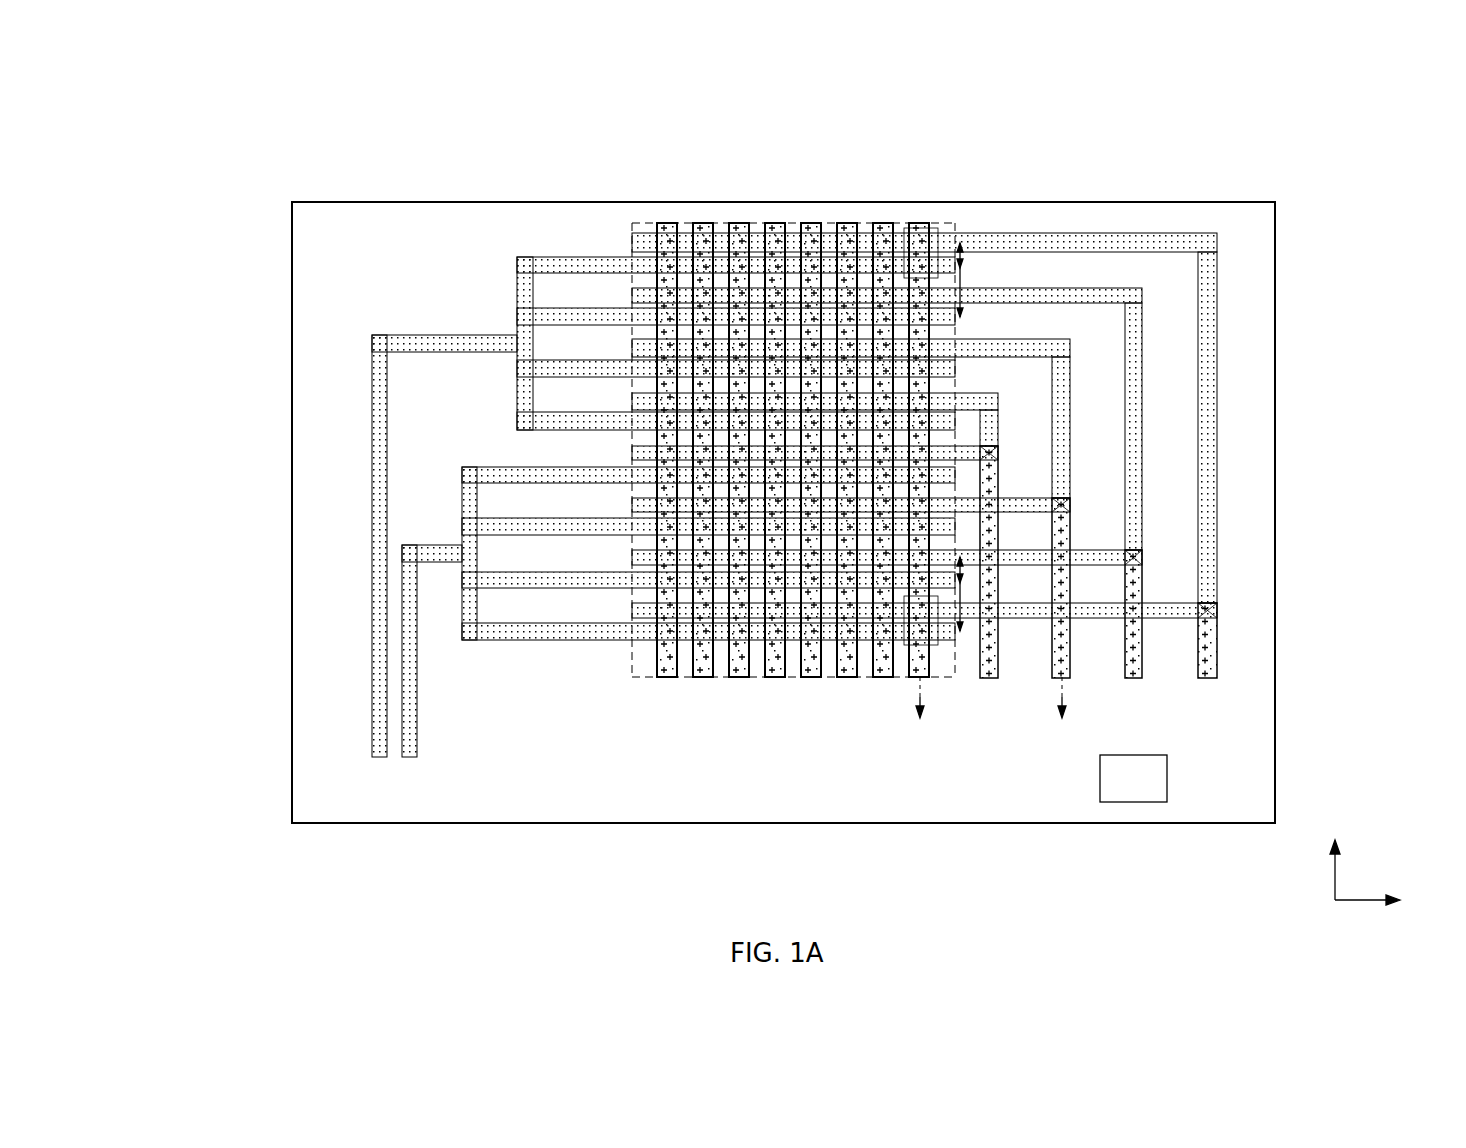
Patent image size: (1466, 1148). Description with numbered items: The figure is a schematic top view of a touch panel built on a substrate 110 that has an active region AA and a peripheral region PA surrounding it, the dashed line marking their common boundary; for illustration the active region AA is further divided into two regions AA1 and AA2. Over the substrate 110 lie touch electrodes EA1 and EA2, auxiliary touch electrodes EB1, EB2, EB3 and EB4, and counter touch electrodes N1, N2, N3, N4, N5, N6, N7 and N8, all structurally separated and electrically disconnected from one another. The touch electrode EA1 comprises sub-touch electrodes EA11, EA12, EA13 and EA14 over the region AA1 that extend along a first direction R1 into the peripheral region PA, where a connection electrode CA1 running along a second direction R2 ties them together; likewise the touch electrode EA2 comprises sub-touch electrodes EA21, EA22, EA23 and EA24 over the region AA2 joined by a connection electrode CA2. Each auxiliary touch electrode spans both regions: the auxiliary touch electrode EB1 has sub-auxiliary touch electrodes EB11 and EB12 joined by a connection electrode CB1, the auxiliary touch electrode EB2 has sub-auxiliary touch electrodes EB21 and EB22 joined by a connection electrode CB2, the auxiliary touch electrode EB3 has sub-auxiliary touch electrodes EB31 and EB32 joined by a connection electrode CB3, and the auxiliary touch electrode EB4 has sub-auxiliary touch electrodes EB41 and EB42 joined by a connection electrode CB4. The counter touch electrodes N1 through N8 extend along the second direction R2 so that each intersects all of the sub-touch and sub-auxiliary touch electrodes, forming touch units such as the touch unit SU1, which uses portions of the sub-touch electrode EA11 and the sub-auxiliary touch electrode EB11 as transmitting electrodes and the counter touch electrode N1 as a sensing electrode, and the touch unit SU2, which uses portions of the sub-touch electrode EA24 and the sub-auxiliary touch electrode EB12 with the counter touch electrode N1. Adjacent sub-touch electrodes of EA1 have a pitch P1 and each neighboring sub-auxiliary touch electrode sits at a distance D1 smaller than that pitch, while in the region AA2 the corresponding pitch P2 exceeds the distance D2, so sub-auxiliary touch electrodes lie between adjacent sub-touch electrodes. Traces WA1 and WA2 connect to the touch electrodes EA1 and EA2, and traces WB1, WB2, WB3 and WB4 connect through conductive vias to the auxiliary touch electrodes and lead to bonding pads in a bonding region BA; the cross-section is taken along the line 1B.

The substrate 110 is at (312, 237).
The peripheral region PA is at (520, 198).
The active region AA is at (633, 205).
The region AA1 is at (650, 205).
The region AA2 is at (638, 698).
The touch unit SU1 is at (938, 208).
The touch unit SU2 is at (899, 663).
The counter touch electrode N1 is at (916, 226).
The counter touch electrode N2 is at (880, 226).
The counter touch electrode N3 is at (847, 226).
The counter touch electrode N4 is at (806, 226).
The counter touch electrode N5 is at (772, 226).
The counter touch electrode N6 is at (739, 226).
The counter touch electrode N7 is at (700, 226).
The counter touch electrode N8 is at (667, 226).
The touch electrode EA1 is at (535, 353).
The sub-touch electrode EA11 is at (643, 265).
The sub-touch electrode EA12 is at (643, 316).
The sub-touch electrode EA13 is at (643, 368).
The sub-touch electrode EA14 is at (643, 421).
The connection electrode CA1 is at (525, 413).
The trace WA1 is at (378, 490).
The touch electrode EA2 is at (535, 589).
The sub-touch electrode EA21 is at (643, 475).
The sub-touch electrode EA22 is at (643, 526).
The sub-touch electrode EA23 is at (643, 579).
The sub-touch electrode EA24 is at (643, 631).
The connection electrode CA2 is at (470, 630).
The trace WA2 is at (407, 745).
The auxiliary touch electrode EB1 is at (1044, 365).
The sub-auxiliary touch electrode EB11 is at (1120, 243).
The sub-auxiliary touch electrode EB12 is at (1170, 610).
The connection electrode CB1 is at (1213, 543).
The trace WB1 is at (1213, 662).
The auxiliary touch electrode EB2 is at (1044, 330).
The sub-auxiliary touch electrode EB21 is at (1117, 298).
The sub-auxiliary touch electrode EB22 is at (1103, 557).
The connection electrode CB2 is at (1135, 402).
The trace WB2 is at (1140, 670).
The auxiliary touch electrode EB3 is at (1045, 356).
The sub-auxiliary touch electrode EB31 is at (1045, 350).
The sub-auxiliary touch electrode EB32 is at (1028, 500).
The connection electrode CB3 is at (1063, 470).
The trace WB3 is at (1058, 677).
The auxiliary touch electrode EB4 is at (883, 260).
The sub-auxiliary touch electrode EB41 is at (968, 400).
The sub-auxiliary touch electrode EB42 is at (967, 453).
The connection electrode CB4 is at (995, 427).
The trace WB4 is at (992, 677).
The distance D1 is at (960, 250).
The pitch P1 is at (960, 300).
The distance D2 is at (963, 568).
The pitch P2 is at (960, 607).
The line 1B- 1B is at (992, 715).
The bonding region BA is at (1155, 792).
The first direction R1 is at (1389, 902).
The second direction R2 is at (1335, 852).